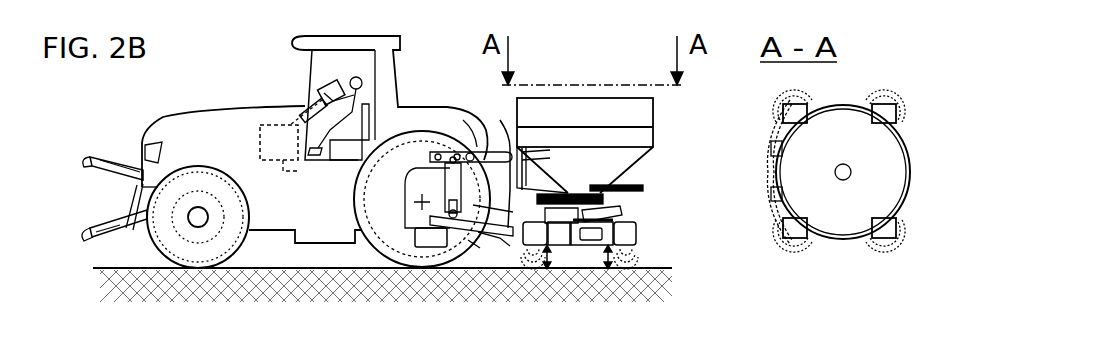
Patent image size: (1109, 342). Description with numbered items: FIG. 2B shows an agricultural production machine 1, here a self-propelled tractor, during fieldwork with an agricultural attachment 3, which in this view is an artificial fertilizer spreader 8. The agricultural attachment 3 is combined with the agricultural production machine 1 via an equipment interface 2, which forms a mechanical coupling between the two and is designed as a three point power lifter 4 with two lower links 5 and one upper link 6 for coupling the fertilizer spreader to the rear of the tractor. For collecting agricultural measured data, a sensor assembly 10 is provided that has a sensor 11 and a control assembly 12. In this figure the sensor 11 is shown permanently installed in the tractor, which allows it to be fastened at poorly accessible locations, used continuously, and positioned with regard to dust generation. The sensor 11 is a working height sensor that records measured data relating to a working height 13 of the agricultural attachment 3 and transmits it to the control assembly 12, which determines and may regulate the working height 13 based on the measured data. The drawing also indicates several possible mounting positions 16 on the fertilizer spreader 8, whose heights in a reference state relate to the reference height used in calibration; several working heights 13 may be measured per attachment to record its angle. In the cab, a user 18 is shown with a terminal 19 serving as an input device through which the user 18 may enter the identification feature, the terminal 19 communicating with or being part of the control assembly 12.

The agricultural production machine 1 is at (193, 127).
The equipment interface 2 is at (487, 147).
The three point power lifter 4 is at (488, 132).
The agricultural attachment 3 is at (738, 141).
The artificial fertilizer spreader 8 is at (552, 108).
The lower link 5 is at (506, 238).
The upper link 6 is at (509, 156).
The sensor assembly 10 is at (757, 228).
The control assembly 12 is at (273, 143).
The sensor 11 is at (425, 246).
The working height 13 is at (541, 247).
The mounting position 16 is at (515, 260).
The user 18 is at (362, 82).
The terminal 19 is at (322, 88).